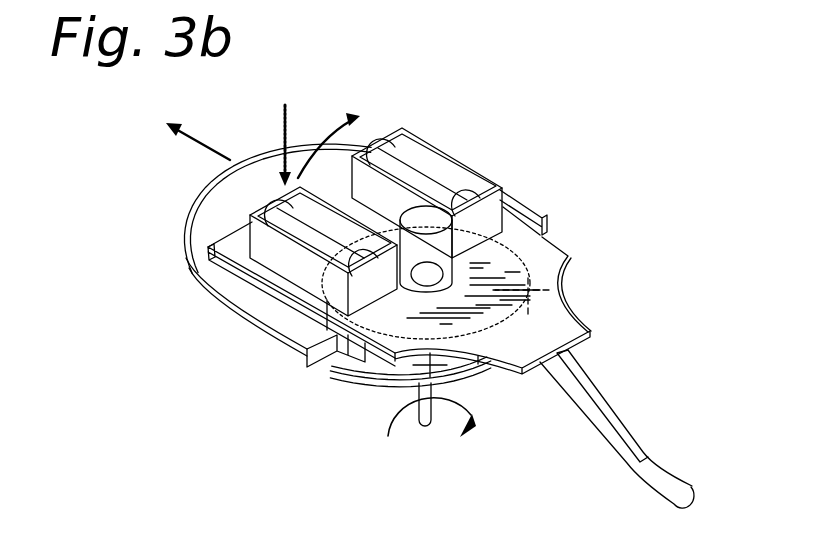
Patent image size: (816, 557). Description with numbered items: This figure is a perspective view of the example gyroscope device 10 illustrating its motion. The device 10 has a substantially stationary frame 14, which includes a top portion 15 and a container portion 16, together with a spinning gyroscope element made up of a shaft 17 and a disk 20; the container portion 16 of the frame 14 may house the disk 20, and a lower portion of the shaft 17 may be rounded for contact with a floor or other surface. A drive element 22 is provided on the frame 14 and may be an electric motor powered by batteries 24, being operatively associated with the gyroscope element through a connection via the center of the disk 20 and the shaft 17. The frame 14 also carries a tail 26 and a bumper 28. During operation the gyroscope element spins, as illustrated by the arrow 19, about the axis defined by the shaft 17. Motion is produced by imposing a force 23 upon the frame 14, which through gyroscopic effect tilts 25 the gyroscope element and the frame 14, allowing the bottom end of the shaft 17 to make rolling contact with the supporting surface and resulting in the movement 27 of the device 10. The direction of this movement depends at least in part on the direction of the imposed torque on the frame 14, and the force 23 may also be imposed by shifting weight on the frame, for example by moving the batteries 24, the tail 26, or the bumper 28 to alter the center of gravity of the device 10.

The gyroscope device 10 is at (568, 160).
The frame 14 is at (556, 216).
The top portion 15 is at (298, 300).
The container portion 16 is at (371, 370).
The shaft 17 is at (423, 423).
The arrow 19 is at (377, 409).
The disk 20 is at (523, 308).
The drive element 22 is at (409, 212).
The force 23 is at (288, 112).
The batteries 24 is at (288, 209).
The tilt 25 is at (340, 112).
The tail 26 is at (655, 460).
The movement 27 is at (204, 142).
The bumper 28 is at (187, 243).